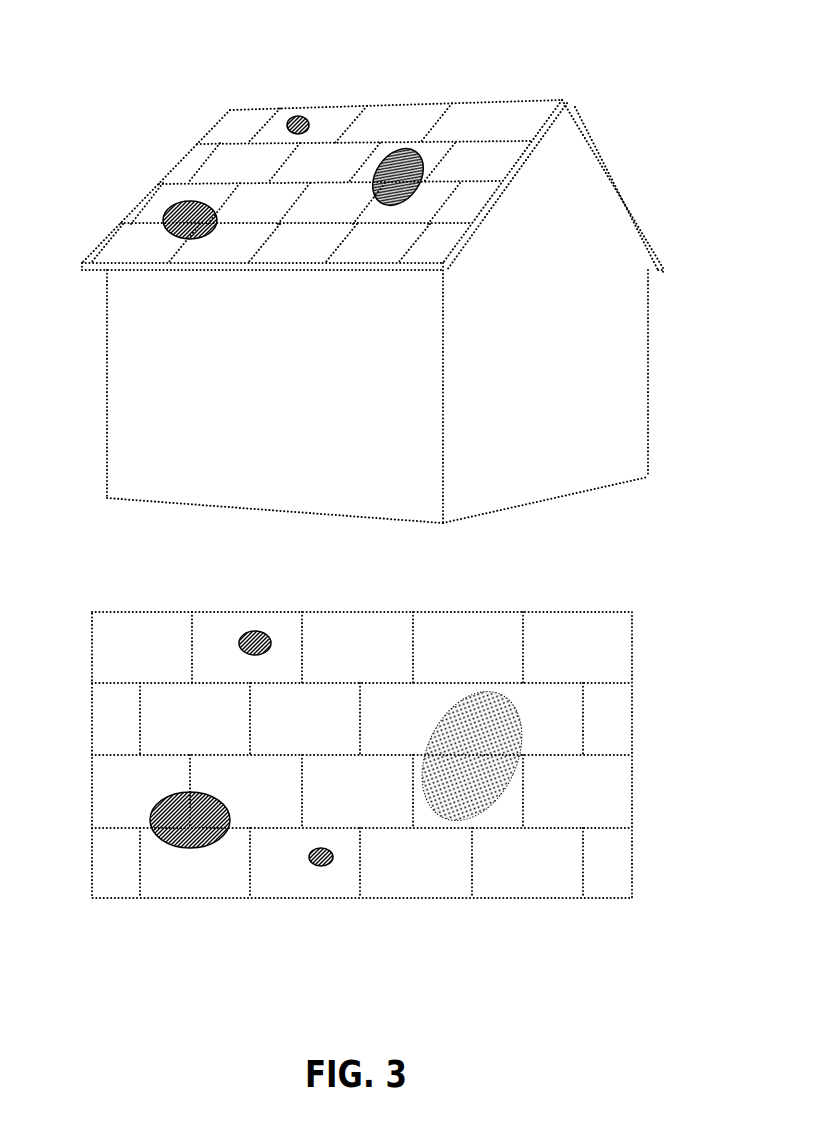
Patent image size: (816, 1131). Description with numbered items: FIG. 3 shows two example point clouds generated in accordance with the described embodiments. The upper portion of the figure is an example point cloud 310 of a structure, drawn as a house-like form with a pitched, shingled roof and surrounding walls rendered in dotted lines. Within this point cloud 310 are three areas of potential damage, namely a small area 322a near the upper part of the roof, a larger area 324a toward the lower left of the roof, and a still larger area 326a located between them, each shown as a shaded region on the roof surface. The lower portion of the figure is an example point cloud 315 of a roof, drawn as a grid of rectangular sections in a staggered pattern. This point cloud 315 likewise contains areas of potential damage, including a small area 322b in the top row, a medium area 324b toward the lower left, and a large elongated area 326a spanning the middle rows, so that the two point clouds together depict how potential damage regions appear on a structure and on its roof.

The point cloud of the structure 310 is at (127, 47).
The point cloud of the roof 315 is at (230, 927).
The area of potential damage 322a is at (302, 114).
The area of potential damage 322b is at (254, 632).
The area of potential damage 324a is at (163, 213).
The area of potential damage 324b is at (153, 800).
The area of potential damage 326a is at (400, 150).